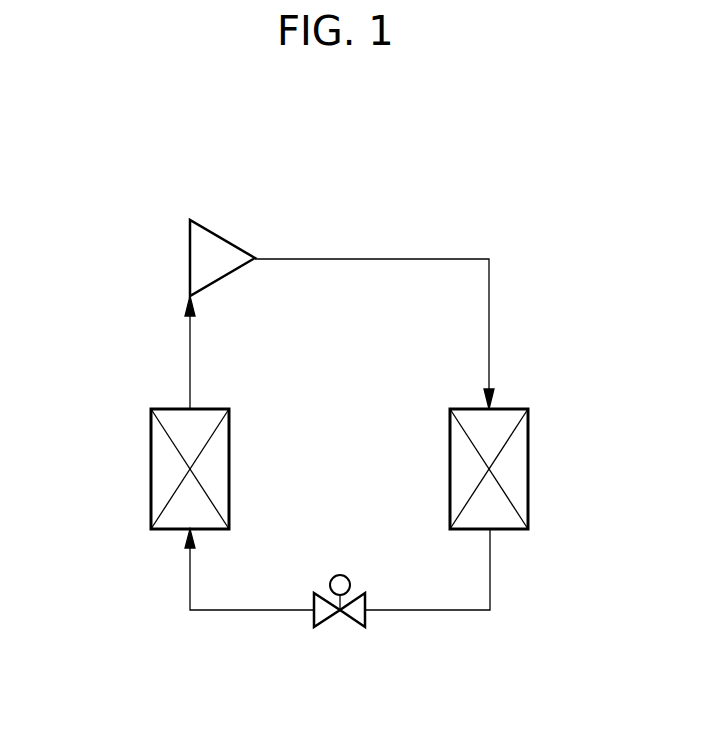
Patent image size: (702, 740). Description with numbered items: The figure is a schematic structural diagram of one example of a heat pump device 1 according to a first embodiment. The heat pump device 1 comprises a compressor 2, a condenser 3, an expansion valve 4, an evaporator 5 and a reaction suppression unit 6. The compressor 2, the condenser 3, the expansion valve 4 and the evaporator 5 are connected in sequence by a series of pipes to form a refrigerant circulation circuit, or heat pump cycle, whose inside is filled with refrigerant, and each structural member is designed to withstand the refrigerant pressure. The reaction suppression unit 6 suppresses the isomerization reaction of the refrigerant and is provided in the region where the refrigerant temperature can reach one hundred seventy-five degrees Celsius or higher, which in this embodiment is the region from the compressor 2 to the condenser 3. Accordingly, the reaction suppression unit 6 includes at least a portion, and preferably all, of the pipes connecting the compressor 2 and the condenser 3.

The heat pump device 1 is at (233, 125).
The compressor 2 is at (190, 252).
The condenser 3 is at (528, 458).
The expansion valve 4 is at (352, 620).
The evaporator 5 is at (151, 468).
The reaction suppression unit 6 is at (356, 257).